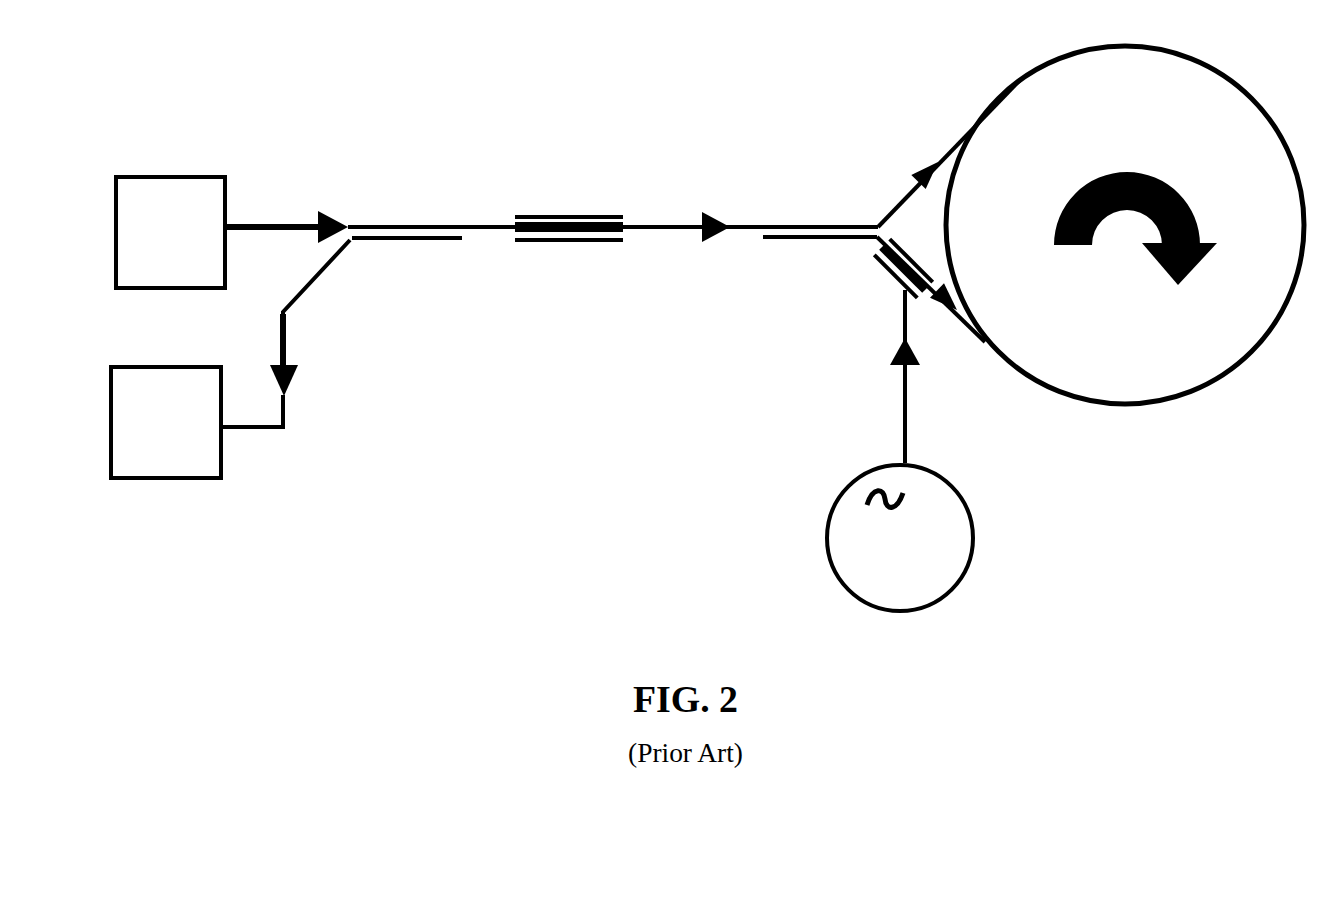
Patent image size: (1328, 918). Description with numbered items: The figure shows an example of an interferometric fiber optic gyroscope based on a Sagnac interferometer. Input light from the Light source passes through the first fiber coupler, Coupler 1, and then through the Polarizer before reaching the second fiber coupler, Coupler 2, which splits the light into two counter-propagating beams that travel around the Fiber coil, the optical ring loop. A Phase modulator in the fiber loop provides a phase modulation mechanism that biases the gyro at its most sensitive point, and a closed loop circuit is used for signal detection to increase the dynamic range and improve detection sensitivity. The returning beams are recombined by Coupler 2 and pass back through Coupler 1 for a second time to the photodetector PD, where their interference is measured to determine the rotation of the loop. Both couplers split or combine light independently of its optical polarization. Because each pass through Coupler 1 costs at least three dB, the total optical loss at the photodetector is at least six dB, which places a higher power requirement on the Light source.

The light source Light source is at (210, 184).
The photodetector PD is at (166, 454).
The first coupler Coupler 1 is at (420, 270).
The polarizer Polarizer is at (572, 183).
The second coupler Coupler 2 is at (818, 210).
The phase modulator Phase modulator is at (877, 288).
The fiber loop Fiber coil is at (1125, 248).